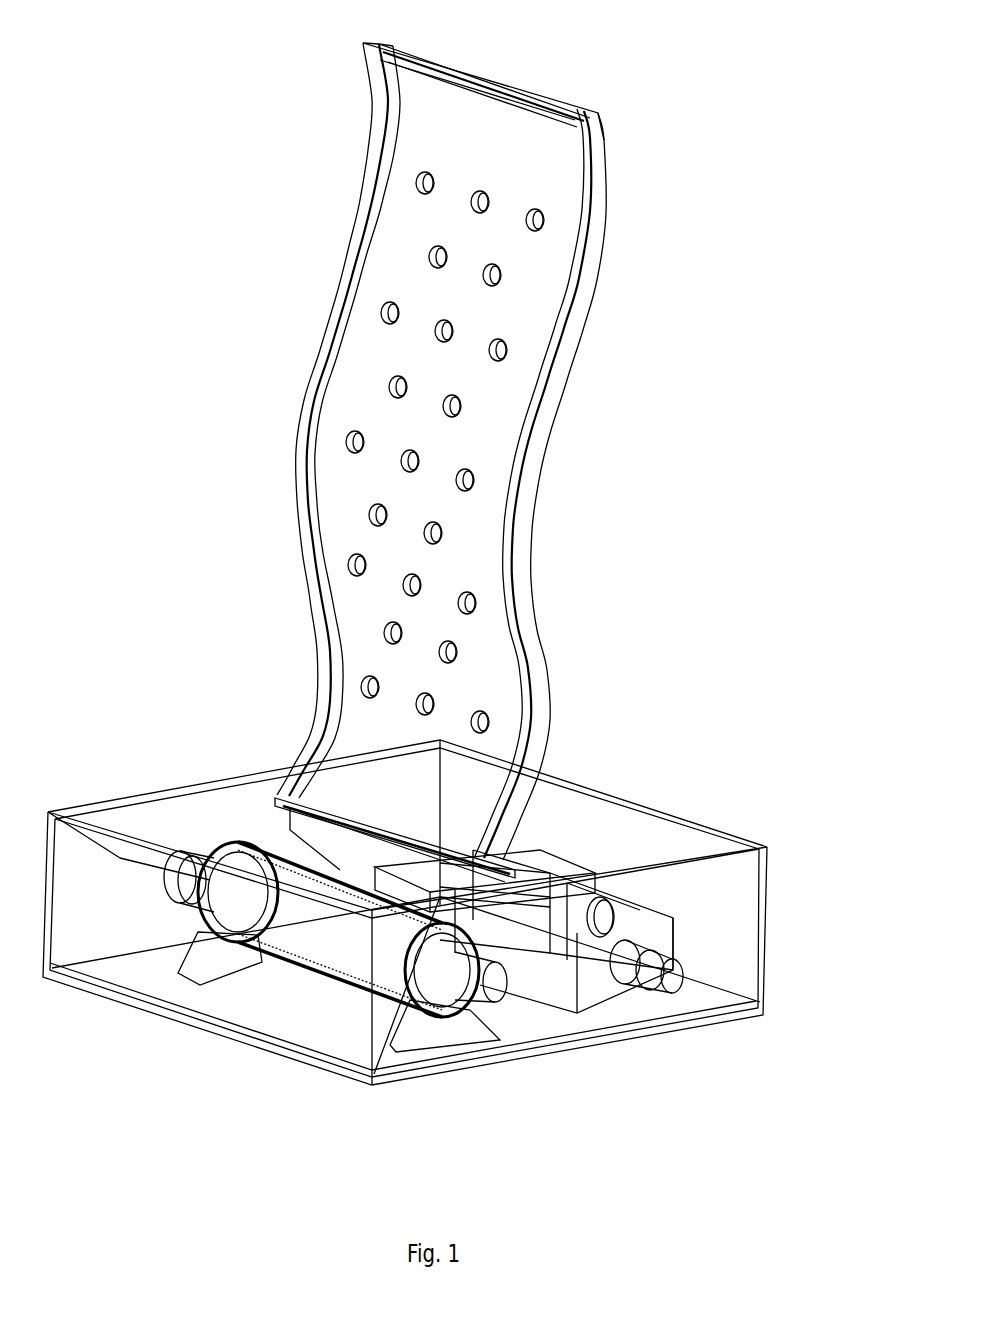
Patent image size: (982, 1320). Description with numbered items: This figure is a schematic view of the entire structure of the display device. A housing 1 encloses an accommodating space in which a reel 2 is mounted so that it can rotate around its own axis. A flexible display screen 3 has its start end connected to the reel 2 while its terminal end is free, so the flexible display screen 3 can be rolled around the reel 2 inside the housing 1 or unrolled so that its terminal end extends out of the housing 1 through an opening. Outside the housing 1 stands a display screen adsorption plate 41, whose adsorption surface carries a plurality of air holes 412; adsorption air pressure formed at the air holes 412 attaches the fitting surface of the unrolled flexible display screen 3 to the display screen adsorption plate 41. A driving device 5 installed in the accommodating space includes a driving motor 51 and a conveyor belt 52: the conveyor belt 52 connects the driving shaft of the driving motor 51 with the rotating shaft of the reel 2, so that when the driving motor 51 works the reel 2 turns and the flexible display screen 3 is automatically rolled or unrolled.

The housing 1 is at (588, 830).
The reel 2 is at (365, 950).
The flexible display screen 3 is at (553, 193).
The display screen adsorption plate 41 is at (585, 285).
The air hole 412 is at (507, 350).
The driving device 5 is at (605, 1026).
The driving motor 51 is at (657, 940).
The conveyor belt 52 is at (558, 993).